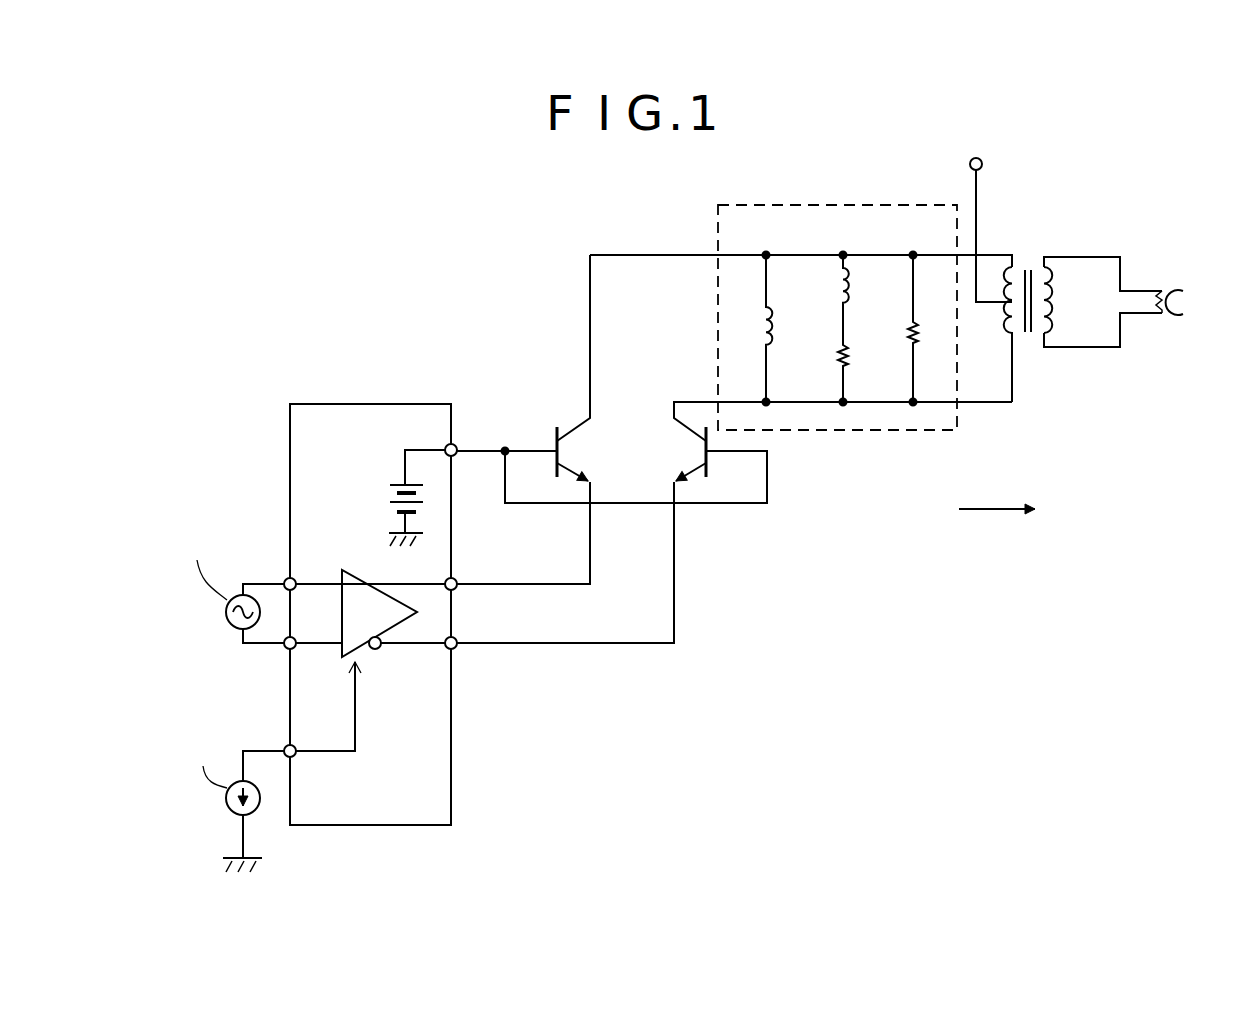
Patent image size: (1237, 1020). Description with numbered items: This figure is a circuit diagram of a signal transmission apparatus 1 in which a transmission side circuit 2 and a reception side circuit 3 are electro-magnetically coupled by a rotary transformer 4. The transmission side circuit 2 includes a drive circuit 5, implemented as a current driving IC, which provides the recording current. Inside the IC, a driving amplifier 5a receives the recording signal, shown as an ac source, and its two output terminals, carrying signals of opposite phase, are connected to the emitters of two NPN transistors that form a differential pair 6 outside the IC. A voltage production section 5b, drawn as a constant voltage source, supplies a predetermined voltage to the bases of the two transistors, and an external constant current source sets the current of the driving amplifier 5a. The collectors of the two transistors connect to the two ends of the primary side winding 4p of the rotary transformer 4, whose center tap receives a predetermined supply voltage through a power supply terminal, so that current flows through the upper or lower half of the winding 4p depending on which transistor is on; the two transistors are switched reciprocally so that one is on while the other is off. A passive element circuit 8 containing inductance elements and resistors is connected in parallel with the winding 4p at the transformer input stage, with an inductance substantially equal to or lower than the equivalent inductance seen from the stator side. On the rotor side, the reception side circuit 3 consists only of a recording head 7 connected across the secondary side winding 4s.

The signal transmission apparatus 1 is at (485, 266).
The transmission side circuit 2 is at (274, 338).
The reception side circuit 3 is at (1087, 380).
The rotary transformer 4 is at (1037, 238).
The primary side winding 4p is at (1010, 317).
The secondary side winding 4s is at (1053, 287).
The drive circuit 5 is at (372, 404).
The driving amplifier 5a is at (355, 568).
The voltage production section 5b is at (394, 484).
The differential pair 6 is at (646, 402).
The recording head 7 is at (1173, 318).
The passive element circuit 8 is at (855, 204).